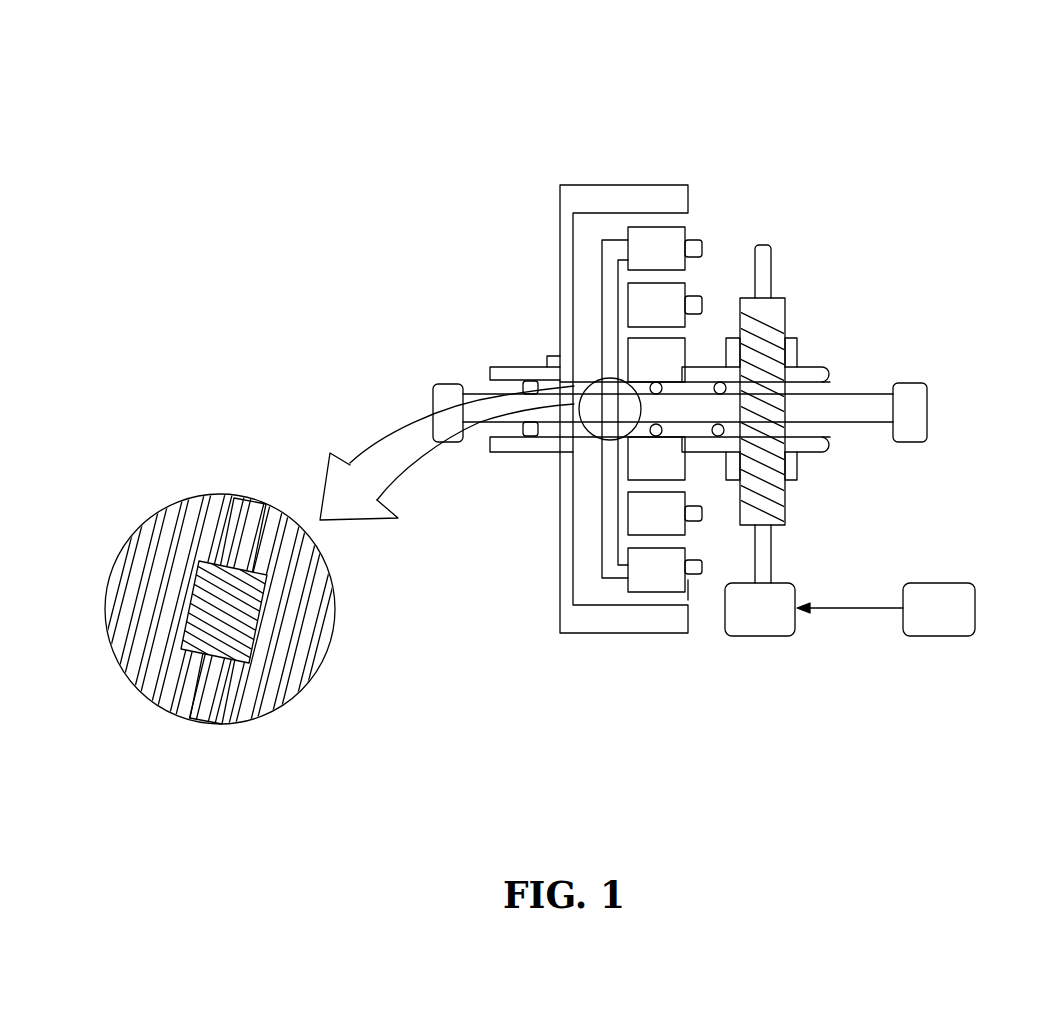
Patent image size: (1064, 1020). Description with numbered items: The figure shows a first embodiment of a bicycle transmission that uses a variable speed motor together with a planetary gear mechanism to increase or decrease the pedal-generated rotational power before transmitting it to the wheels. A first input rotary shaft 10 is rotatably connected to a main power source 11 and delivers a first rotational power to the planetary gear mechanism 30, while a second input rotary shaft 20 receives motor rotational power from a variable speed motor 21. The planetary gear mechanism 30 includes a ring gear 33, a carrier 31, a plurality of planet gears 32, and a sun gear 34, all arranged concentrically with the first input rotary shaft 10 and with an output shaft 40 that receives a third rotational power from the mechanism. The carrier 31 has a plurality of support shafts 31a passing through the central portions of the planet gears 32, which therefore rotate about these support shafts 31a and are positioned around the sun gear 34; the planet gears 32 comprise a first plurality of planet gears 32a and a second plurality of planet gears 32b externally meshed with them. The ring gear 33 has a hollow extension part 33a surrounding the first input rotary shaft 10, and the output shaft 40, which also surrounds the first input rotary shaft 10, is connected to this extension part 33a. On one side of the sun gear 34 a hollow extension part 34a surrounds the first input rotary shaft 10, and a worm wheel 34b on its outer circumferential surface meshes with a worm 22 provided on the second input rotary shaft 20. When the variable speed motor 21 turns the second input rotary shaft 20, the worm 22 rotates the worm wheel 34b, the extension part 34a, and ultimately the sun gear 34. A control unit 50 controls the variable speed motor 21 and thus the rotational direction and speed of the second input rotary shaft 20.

The first input rotary shaft 10 is at (865, 394).
The main power source 11 is at (433, 401).
The second input rotary shaft 20 is at (771, 265).
The variable speed motor 21 is at (753, 618).
The worm 22 is at (780, 503).
The planetary gear mechanism 30 is at (992, 232).
The carrier 31 is at (600, 472).
The support shafts 31a is at (688, 573).
The planet gears 32 is at (548, 459).
The first plurality of planet gears 32a is at (655, 511).
The second plurality of planet gears 32b is at (657, 567).
The ring gear 33 is at (627, 205).
The extension part 33a is at (547, 367).
The sun gear 34 is at (667, 357).
The extension part 34a is at (820, 368).
The worm wheel 34b is at (797, 345).
The output shaft 40 is at (490, 368).
The control unit 50 is at (940, 622).